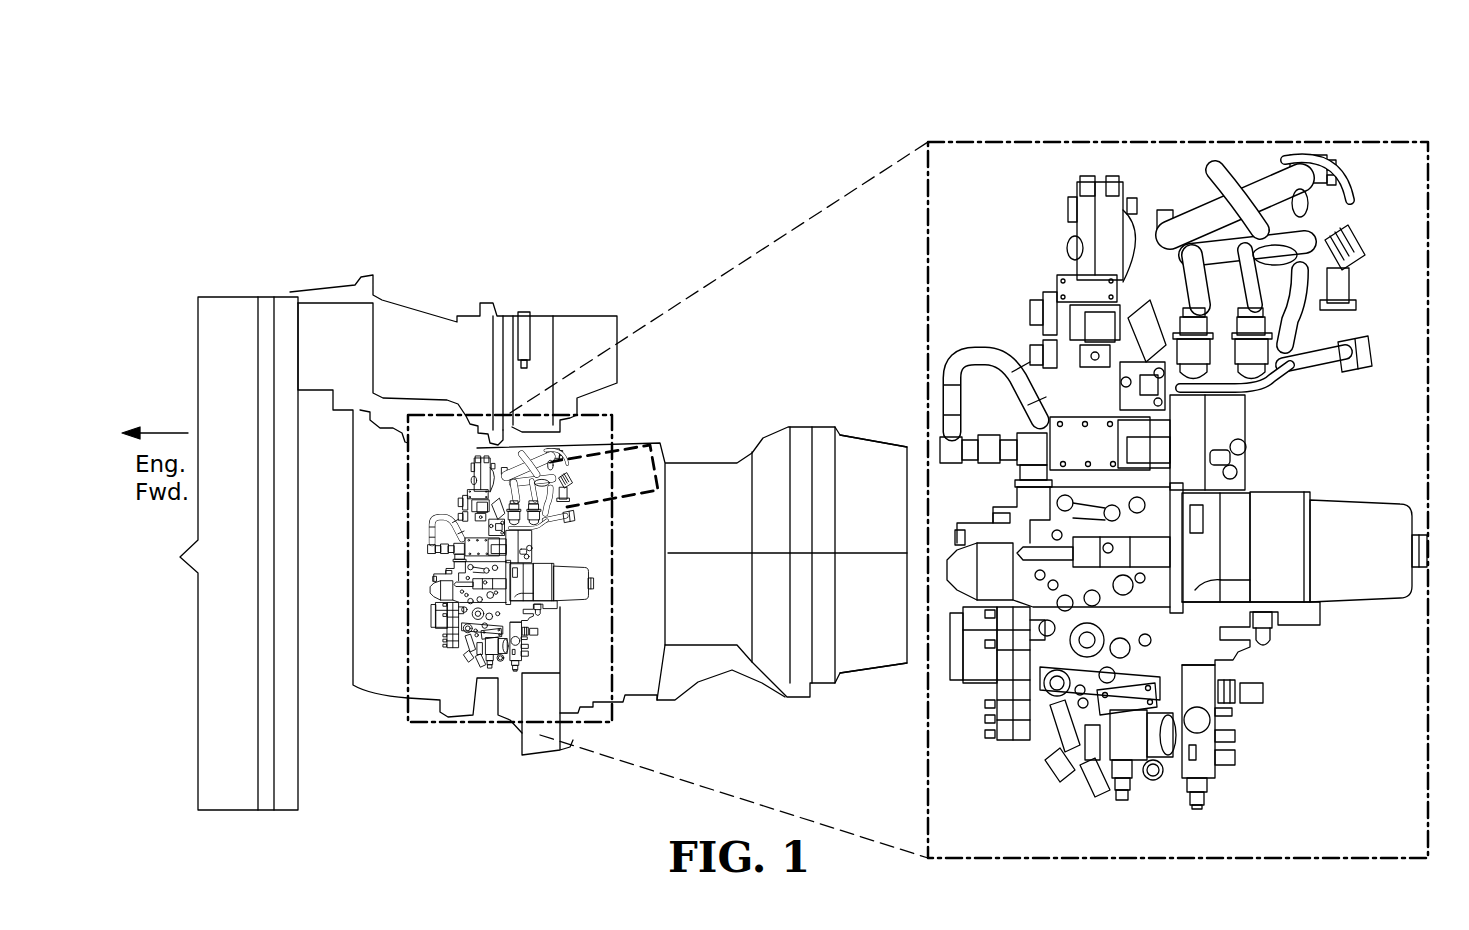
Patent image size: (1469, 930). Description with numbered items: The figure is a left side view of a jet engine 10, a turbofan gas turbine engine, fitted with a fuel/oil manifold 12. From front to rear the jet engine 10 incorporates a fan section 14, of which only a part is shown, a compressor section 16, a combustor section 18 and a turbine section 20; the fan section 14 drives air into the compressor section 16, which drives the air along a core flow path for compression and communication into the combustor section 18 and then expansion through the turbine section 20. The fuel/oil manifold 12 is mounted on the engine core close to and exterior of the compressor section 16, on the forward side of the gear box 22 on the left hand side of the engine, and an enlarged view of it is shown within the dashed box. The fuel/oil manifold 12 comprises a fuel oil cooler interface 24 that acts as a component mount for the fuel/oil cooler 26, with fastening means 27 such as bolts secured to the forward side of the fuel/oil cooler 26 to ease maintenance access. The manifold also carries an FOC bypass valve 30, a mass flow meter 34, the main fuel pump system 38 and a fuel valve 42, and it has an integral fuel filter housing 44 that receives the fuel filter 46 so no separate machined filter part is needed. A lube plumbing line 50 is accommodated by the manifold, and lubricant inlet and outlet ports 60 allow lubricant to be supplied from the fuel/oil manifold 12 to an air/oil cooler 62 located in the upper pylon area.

The jet engine 10 is at (286, 152).
The fuel/oil manifold 12 is at (536, 626).
The fan section 14 is at (300, 822).
The compressor section 16 is at (628, 204).
The combustor section 18 is at (795, 204).
The turbine section 20 is at (863, 204).
The gear box 22 is at (565, 740).
The fuel oil cooler interface 24 is at (1372, 155).
The fuel/oil cooler 26 is at (658, 450).
The fastening means 27 is at (1340, 225).
The FOC bypass valve 30 is at (1077, 222).
The mass flow meter 34 is at (1058, 417).
The main fuel pump system 38 is at (970, 683).
The fuel valve 42 is at (1260, 490).
The integral fuel filter housing 44 is at (1297, 490).
The fuel filter 46 is at (1360, 492).
The lube plumbing line 50 is at (1337, 373).
The lubricant inlet and outlet ports 60 is at (1255, 307).
The air/oil cooler 62 is at (548, 310).